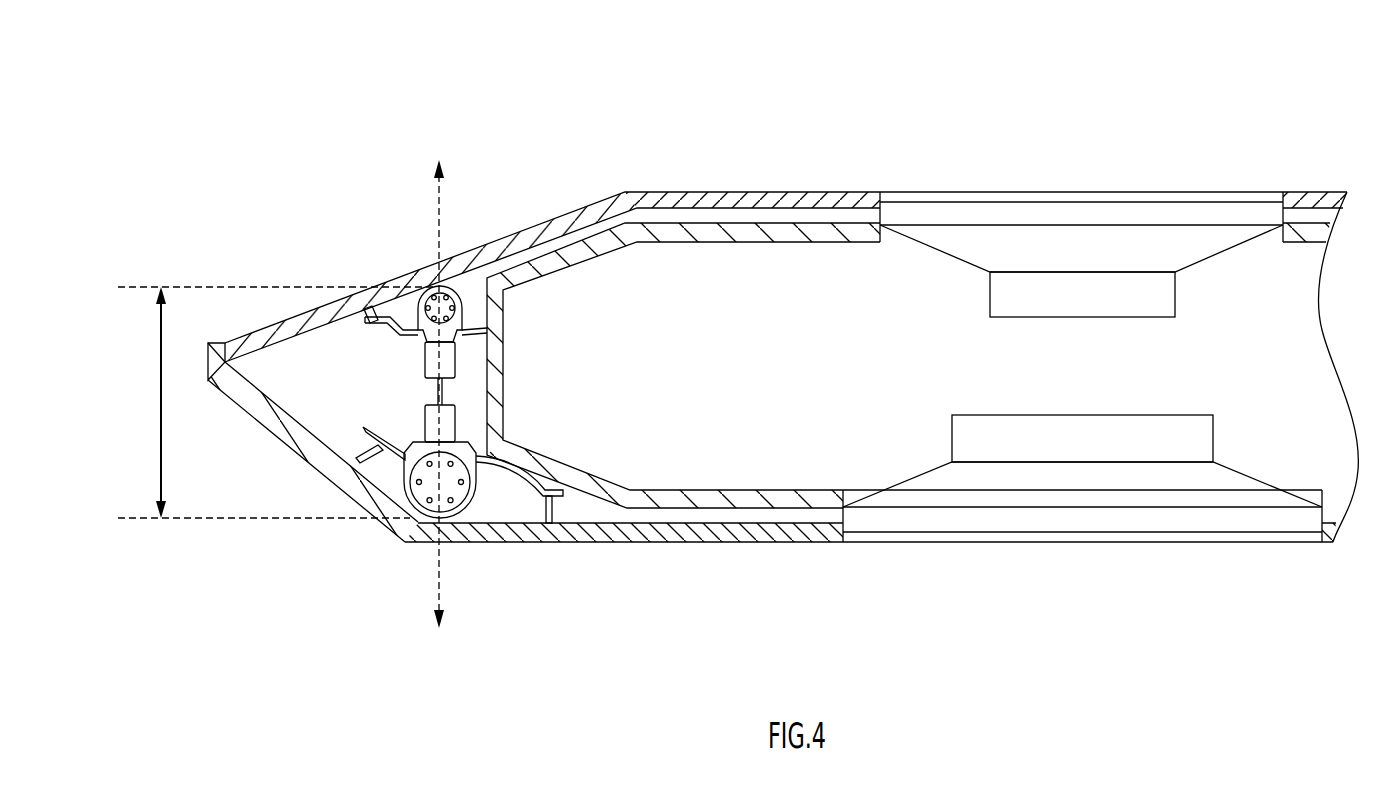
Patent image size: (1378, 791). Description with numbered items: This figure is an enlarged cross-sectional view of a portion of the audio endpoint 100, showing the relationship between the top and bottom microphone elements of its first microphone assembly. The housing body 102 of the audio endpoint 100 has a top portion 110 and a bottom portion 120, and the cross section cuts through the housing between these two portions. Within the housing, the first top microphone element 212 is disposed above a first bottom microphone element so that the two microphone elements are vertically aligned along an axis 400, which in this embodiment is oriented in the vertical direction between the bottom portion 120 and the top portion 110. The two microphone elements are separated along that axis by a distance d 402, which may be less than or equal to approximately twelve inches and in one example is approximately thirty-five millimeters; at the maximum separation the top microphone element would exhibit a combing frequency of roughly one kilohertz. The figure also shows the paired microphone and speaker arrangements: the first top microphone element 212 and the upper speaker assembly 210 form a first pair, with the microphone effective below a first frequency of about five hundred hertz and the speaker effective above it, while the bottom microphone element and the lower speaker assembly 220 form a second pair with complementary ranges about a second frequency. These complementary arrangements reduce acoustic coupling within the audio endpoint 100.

The audio endpoint 100 is at (423, 106).
The housing body 102 is at (285, 388).
The top portion 110 is at (753, 192).
The bottom portion 120 is at (677, 543).
The upper speaker assembly 210 is at (1208, 257).
The first top microphone element 212 is at (425, 320).
The lower speaker assembly 220 is at (1258, 480).
The axis 400 is at (439, 229).
The distance d 402 is at (160, 466).